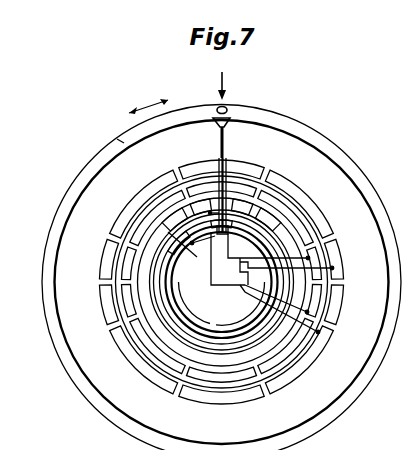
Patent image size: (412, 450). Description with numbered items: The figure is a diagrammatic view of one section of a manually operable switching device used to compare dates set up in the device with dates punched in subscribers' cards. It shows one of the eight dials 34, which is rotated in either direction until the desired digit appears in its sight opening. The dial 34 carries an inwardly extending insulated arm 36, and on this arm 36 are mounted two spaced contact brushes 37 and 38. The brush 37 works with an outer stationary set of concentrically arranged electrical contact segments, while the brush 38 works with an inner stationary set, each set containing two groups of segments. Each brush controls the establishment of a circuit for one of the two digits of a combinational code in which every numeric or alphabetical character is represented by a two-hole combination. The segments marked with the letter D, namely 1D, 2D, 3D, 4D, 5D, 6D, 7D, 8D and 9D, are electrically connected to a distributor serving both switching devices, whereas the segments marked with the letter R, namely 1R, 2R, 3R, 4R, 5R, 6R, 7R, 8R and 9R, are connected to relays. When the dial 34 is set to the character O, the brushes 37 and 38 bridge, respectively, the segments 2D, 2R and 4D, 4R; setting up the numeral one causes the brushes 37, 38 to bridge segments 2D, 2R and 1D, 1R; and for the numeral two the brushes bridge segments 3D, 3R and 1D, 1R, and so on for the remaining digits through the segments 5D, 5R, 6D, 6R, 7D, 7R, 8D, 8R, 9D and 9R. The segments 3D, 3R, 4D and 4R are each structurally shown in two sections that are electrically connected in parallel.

The dial 34 is at (304, 126).
The insulated arm 36 is at (224, 124).
The contact brush 37 is at (226, 168).
The contact brush 38 is at (238, 200).
The contact segment 1D is at (197, 317).
The contact segment 1R is at (228, 325).
The contact segment 2D is at (283, 183).
The contact segment 2R is at (283, 207).
The contact segment 3D is at (325, 227).
The contact segment 3R is at (317, 257).
The contact segment 4D is at (340, 298).
The contact segment 4R is at (312, 320).
The contact segment 5D is at (308, 360).
The contact segment 5R is at (275, 358).
The contact segment 6D is at (232, 400).
The contact segment 6R is at (208, 377).
The contact segment 7D is at (173, 392).
The contact segment 7R is at (157, 352).
The contact segment 8D is at (118, 345).
The contact segment 8R is at (128, 308).
The contact segment 9D is at (107, 262).
The contact segment 9R is at (133, 245).